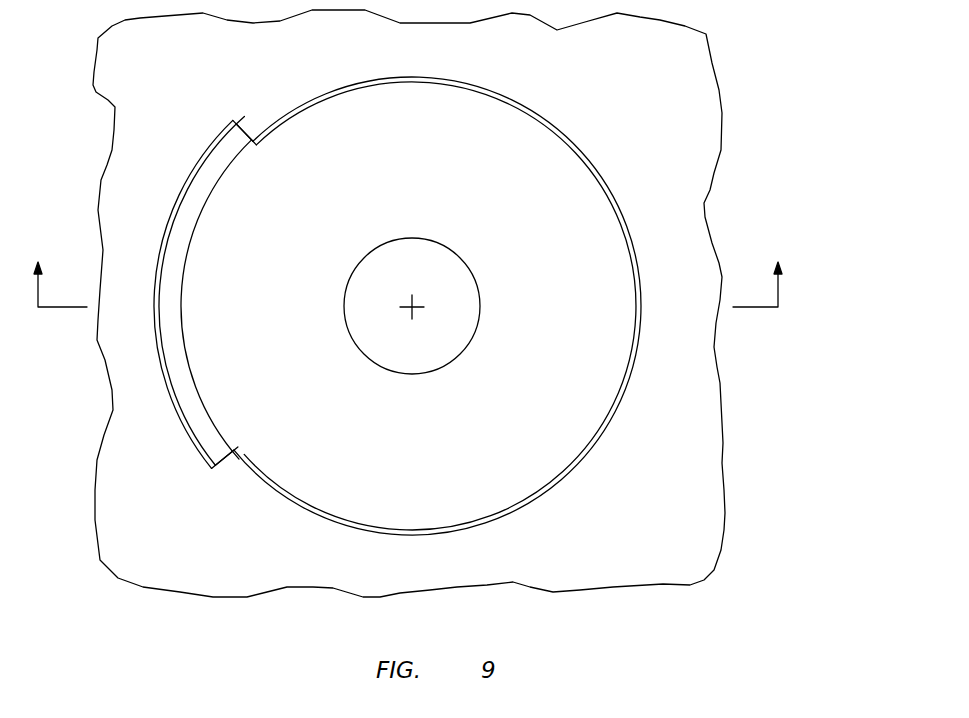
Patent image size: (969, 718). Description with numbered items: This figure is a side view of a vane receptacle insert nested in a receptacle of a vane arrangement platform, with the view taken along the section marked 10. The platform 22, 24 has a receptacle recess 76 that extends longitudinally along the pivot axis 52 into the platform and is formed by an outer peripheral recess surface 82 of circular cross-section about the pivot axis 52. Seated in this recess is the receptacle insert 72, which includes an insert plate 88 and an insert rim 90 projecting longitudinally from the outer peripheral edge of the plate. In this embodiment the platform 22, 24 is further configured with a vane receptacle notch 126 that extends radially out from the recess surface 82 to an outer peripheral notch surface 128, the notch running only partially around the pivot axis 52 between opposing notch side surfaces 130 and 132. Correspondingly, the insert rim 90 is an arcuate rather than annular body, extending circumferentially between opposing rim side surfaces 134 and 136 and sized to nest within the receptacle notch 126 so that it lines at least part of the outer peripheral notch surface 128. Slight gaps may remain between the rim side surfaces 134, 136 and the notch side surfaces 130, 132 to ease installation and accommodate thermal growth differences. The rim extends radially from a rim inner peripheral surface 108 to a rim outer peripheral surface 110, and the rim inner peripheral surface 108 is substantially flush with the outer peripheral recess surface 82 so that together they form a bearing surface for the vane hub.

The section line 10- 10 is at (411, 272).
The platform 22 is at (737, 72).
The platform 24 is at (409, 303).
The pivot axis 52 is at (415, 312).
The receptacle insert 72 is at (614, 191).
The receptacle recess 76 is at (528, 96).
The outer peripheral recess surface 82 is at (560, 476).
The insert plate 88 is at (573, 395).
The insert rim 90 is at (181, 440).
The rim inner peripheral surface 108 is at (185, 347).
The rim outer peripheral surface 110 is at (155, 345).
The vane receptacle notch 126 is at (214, 124).
The outer peripheral notch surface 128 is at (172, 223).
The notch side surface 130 is at (223, 438).
The notch side surface 132 is at (238, 147).
The rim side surface 134 is at (213, 468).
The rim side surface 136 is at (252, 140).